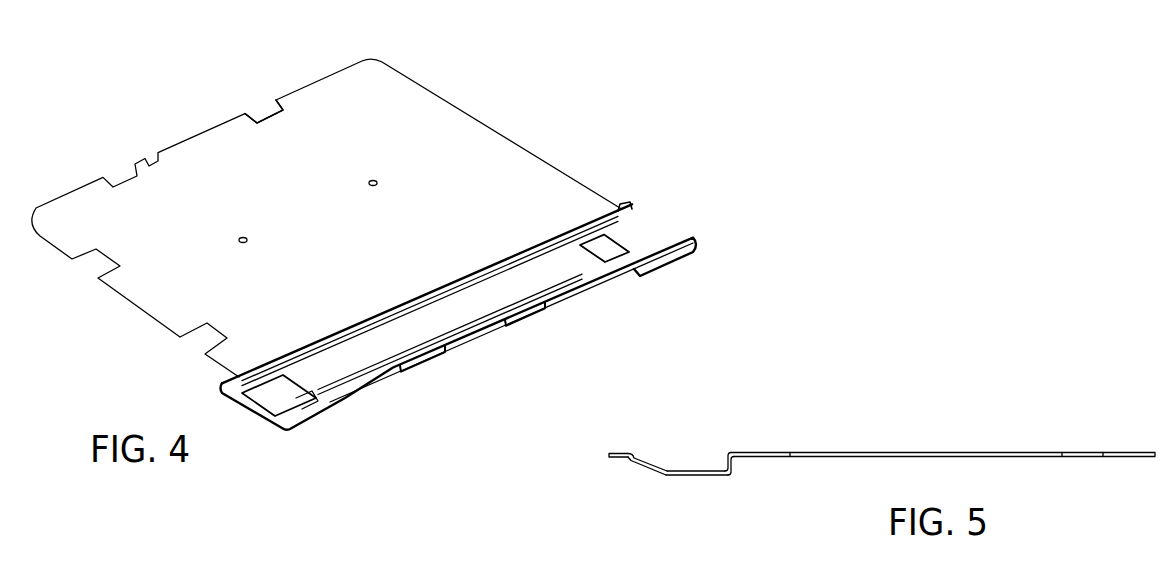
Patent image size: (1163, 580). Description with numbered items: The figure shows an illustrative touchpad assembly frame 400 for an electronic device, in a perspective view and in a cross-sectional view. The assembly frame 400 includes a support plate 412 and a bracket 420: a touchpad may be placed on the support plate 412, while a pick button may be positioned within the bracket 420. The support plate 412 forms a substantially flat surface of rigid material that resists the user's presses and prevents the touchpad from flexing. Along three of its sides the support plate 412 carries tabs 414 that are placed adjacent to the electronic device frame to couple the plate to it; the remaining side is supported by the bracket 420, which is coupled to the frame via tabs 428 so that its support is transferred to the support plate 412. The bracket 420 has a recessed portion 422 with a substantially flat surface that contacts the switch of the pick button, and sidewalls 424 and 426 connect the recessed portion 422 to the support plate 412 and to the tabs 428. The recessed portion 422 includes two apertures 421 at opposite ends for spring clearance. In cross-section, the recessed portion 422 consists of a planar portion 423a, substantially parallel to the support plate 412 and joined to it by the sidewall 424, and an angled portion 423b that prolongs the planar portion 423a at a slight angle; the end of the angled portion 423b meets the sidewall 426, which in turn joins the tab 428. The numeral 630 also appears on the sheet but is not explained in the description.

In FIG. 4, the assembly frame 400 is at (201, 103).
In FIG. 5, the assembly frame 400 is at (1008, 386).
In FIG. 4, the support plate 412 is at (157, 296).
In FIG. 5, the support plate 412 is at (968, 452).
In FIG. 4, the tabs 414 is at (300, 103).
In FIG. 4, the bracket 420 is at (572, 260).
In FIG. 5, the bracket 420 is at (676, 462).
In FIG. 4, the apertures 421 is at (632, 247).
In FIG. 5, the recessed portion 422 is at (702, 468).
In FIG. 5, the planar portion 423a is at (695, 476).
In FIG. 5, the angled portion 423b is at (637, 471).
In FIG. 5, the sidewall 424 is at (737, 467).
In FIG. 5, the sidewall 426 is at (640, 457).
In FIG. 5, the tabs 428 is at (620, 452).
In FIG. 4, the reference 630 is at (417, 569).